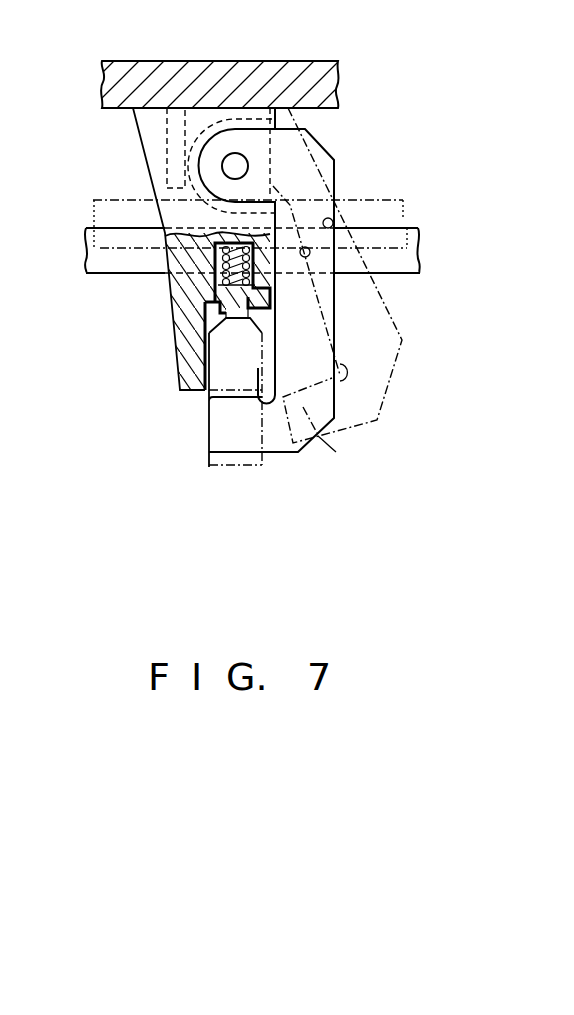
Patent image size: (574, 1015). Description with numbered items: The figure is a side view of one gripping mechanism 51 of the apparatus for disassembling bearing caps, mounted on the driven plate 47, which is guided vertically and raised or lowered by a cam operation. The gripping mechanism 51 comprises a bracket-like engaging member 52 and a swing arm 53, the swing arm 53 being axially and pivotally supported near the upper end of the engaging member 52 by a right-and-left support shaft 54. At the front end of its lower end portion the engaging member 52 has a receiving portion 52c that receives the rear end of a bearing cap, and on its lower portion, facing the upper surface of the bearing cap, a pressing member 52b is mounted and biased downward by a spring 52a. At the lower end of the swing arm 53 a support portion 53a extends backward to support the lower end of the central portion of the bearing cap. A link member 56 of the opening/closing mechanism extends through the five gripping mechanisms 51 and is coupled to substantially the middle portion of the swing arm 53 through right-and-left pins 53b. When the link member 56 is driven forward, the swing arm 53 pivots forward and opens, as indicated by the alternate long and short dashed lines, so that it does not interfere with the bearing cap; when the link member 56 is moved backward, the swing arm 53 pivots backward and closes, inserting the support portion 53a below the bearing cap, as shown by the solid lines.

The driven plate 47 is at (216, 72).
The gripping mechanism 51 is at (132, 443).
The engaging member 52 is at (175, 263).
The spring 52a is at (215, 283).
The pressing member 52b is at (248, 323).
The receiving portion 52c is at (180, 372).
The swing arm 53 is at (320, 340).
The support portion 53a is at (215, 432).
The pin 53b is at (310, 250).
The support shaft 54 is at (243, 165).
The link member 56 is at (405, 222).